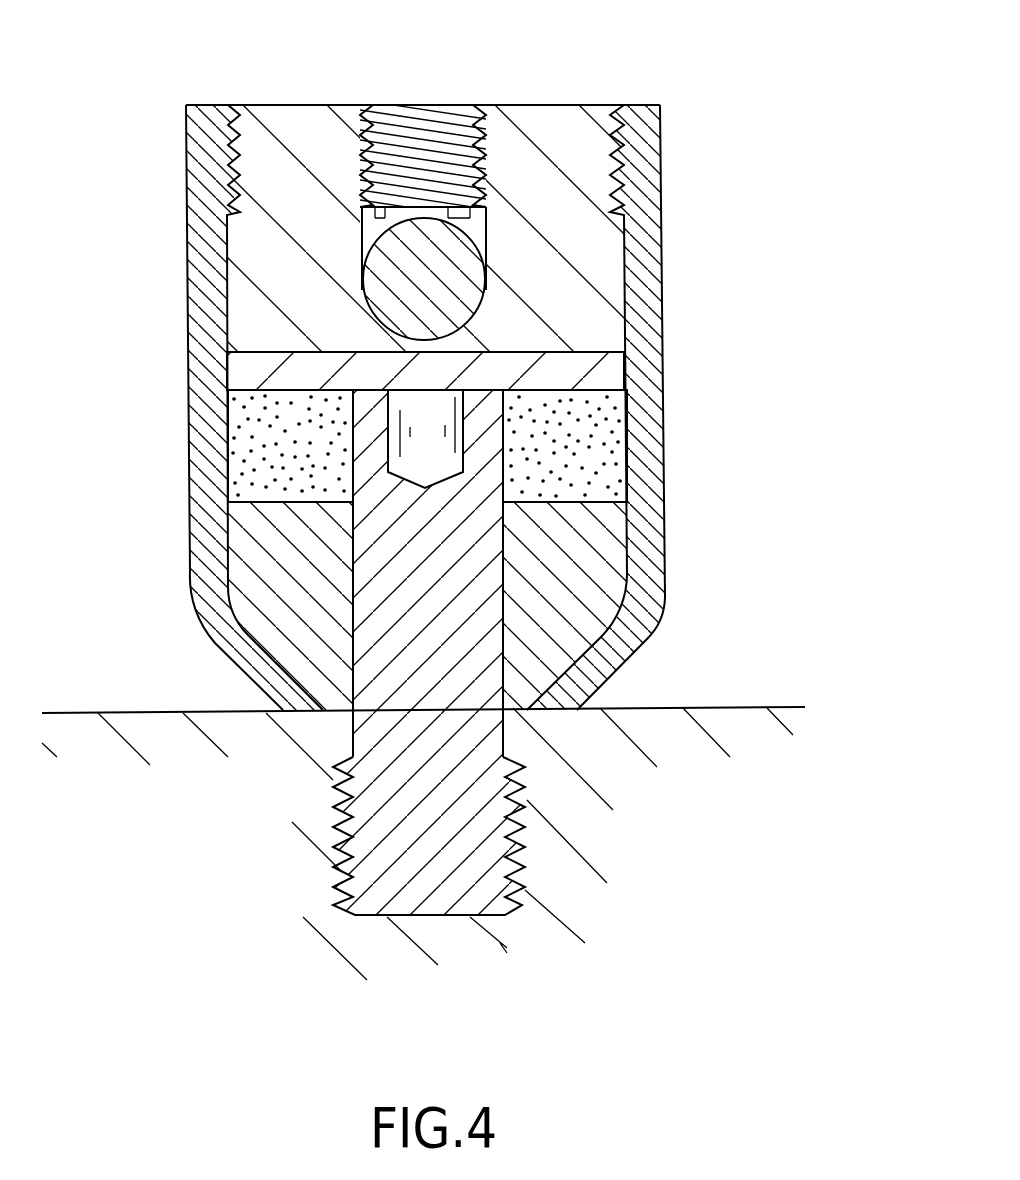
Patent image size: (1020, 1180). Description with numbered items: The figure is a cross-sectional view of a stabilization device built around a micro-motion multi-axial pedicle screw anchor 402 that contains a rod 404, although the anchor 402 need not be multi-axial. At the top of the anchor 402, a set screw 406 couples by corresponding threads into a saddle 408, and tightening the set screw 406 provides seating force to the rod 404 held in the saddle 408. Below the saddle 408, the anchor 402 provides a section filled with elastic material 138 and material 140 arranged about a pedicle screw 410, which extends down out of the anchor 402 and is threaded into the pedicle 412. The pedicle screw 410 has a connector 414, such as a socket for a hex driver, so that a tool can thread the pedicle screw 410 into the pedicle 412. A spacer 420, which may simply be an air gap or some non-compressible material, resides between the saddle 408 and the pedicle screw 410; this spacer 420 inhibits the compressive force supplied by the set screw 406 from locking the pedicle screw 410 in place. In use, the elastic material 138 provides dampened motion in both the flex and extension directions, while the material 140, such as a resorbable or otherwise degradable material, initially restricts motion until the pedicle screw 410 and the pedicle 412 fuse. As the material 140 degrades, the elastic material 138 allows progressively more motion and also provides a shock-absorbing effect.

The pedicle screw anchor 402 is at (667, 563).
The rod 404 is at (458, 270).
The set screw 406 is at (443, 115).
The saddle 408 is at (600, 296).
The pedicle screw 410 is at (497, 873).
The pedicle 412 is at (708, 774).
The connector 414 is at (503, 408).
The elastic material 138 is at (607, 456).
The material 140 is at (570, 628).
The spacer 420 is at (257, 370).